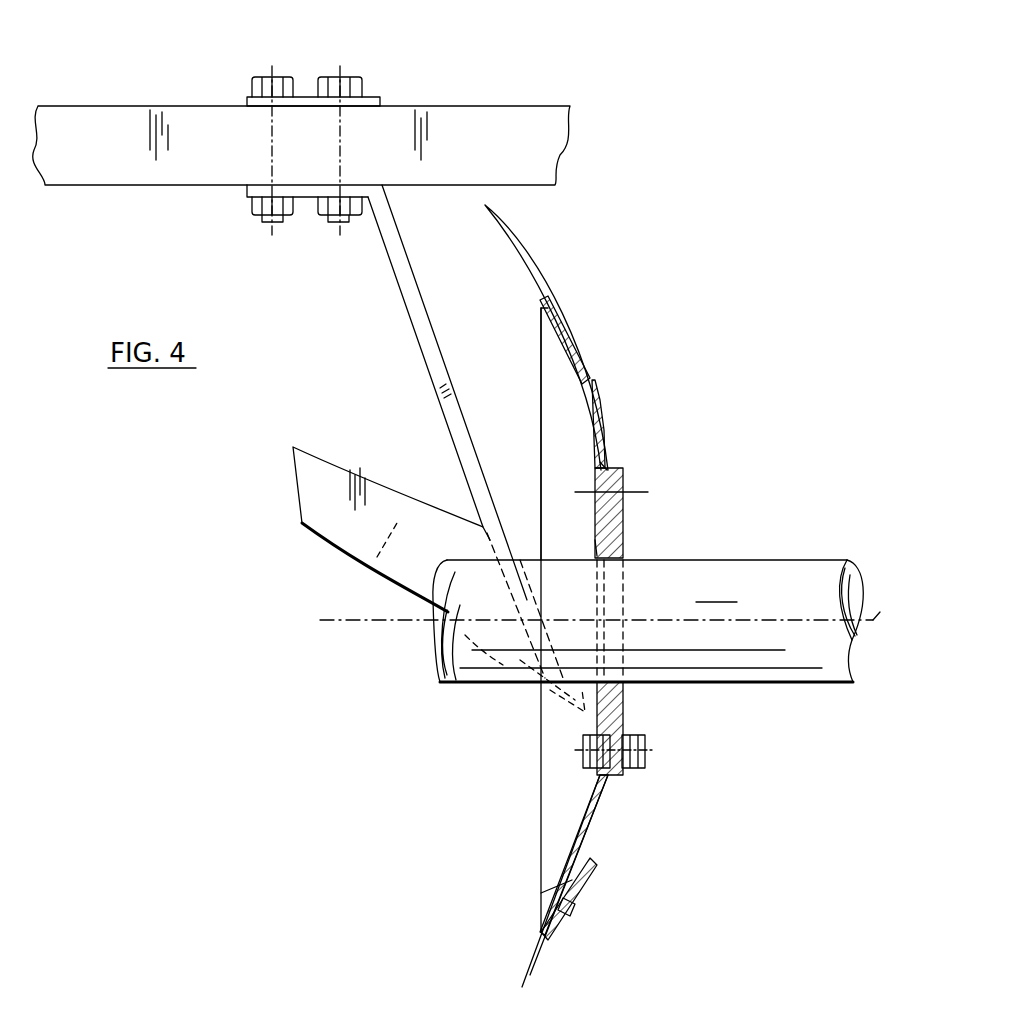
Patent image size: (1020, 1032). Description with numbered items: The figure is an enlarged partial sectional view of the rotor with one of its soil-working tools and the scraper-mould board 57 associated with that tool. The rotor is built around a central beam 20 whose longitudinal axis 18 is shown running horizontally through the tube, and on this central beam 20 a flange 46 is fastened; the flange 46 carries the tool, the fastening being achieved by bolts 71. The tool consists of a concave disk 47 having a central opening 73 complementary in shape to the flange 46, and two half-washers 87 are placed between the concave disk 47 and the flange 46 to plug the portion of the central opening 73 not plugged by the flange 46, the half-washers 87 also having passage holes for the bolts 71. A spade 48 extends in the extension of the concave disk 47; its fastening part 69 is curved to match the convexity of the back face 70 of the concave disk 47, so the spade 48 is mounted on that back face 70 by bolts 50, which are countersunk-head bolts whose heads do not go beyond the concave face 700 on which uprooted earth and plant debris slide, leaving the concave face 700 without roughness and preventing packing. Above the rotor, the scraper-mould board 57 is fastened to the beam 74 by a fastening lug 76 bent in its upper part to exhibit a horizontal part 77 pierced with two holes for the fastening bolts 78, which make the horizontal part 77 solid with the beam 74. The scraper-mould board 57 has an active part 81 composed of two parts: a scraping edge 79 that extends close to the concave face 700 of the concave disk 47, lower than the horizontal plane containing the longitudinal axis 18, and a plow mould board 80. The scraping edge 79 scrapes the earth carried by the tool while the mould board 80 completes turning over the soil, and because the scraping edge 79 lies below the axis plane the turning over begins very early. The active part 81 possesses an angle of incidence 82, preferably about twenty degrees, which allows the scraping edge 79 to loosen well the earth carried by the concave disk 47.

The beam 74 is at (470, 120).
The fastening bolts 78 is at (338, 72).
The horizontal part 77 is at (303, 192).
The fastening lug 76 is at (427, 328).
The spade 48 is at (523, 252).
The concave disk 47 is at (558, 430).
The flange 46 is at (623, 535).
The half-washers 87 is at (600, 468).
The central opening 73 is at (597, 548).
The central beam 20 is at (596, 621).
The longitudinal axis 18 is at (894, 603).
The scraper-mould board 57 is at (416, 495).
The mould board 80 is at (372, 560).
The active part 81 is at (503, 684).
The scraping edge 79 is at (585, 712).
The angle of incidence 82 is at (572, 590).
The back face 70 is at (600, 818).
The bolts 71 is at (650, 750).
The concave face 700 is at (575, 850).
The fastening part 69 is at (585, 872).
The bolts 50 is at (578, 908).